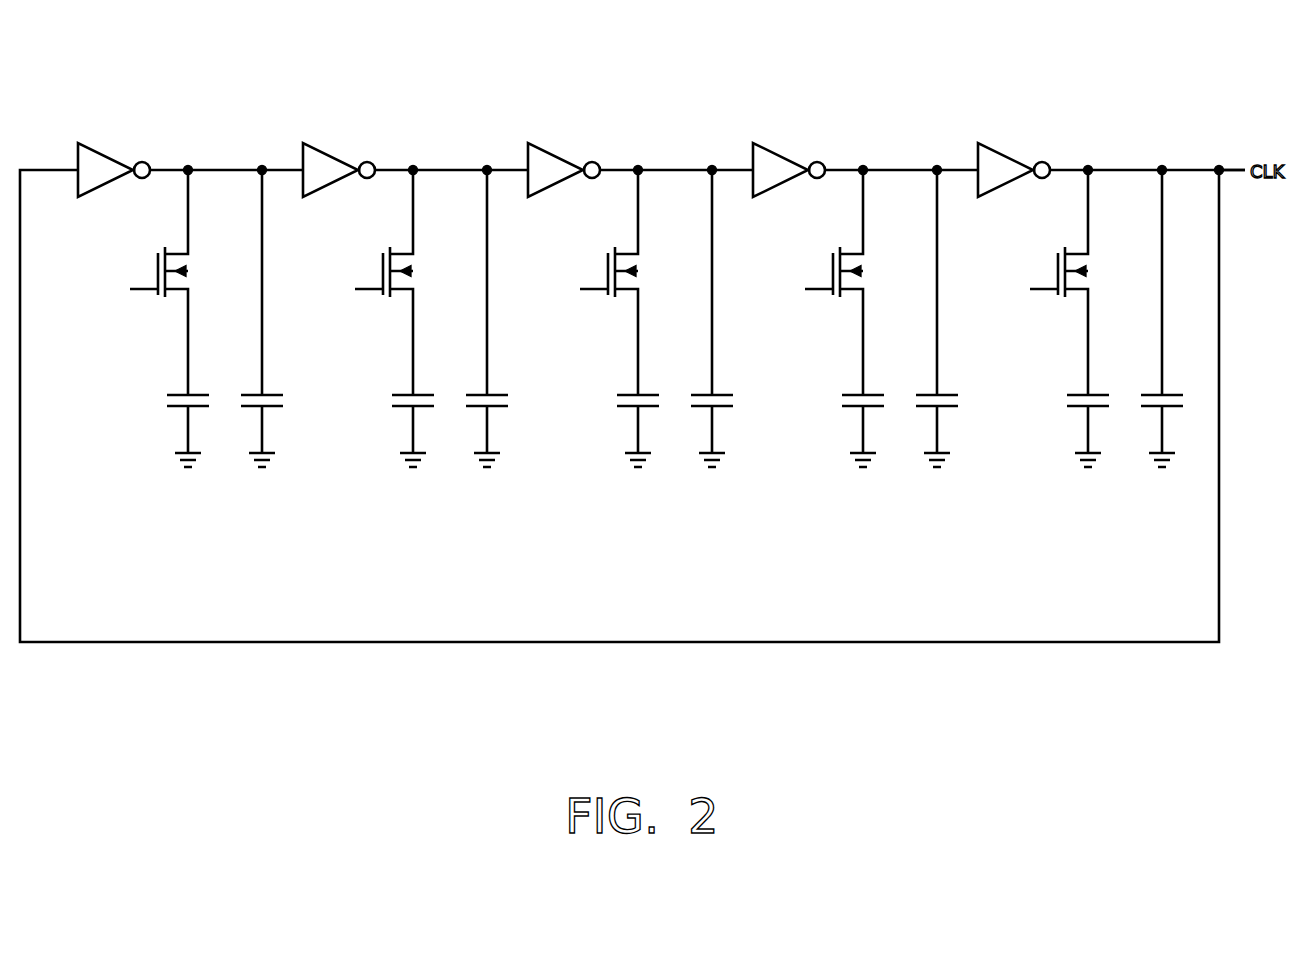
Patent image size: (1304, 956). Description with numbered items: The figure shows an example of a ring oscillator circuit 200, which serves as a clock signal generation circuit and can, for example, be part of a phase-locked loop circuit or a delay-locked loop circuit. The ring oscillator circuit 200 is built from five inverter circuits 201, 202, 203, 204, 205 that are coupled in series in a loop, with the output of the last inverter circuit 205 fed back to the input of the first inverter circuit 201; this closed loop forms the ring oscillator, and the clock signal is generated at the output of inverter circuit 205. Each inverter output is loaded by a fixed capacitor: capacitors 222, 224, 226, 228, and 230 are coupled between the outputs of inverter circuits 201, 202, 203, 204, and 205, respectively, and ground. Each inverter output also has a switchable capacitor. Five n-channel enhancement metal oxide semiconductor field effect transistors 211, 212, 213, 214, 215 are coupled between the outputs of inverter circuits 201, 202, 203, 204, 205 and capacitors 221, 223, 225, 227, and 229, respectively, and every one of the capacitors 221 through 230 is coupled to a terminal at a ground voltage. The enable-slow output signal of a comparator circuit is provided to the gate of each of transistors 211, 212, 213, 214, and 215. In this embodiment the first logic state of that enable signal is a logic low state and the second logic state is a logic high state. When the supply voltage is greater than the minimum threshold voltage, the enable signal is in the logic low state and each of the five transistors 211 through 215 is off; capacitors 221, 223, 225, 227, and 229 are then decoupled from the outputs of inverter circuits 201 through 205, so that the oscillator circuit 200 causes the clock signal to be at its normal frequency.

The ring oscillator circuit 200 is at (150, 62).
The inverter circuit 201 is at (107, 157).
The inverter circuit 202 is at (332, 157).
The inverter circuit 203 is at (557, 157).
The inverter circuit 204 is at (782, 157).
The inverter circuit 205 is at (1007, 157).
The n-channel enhancement MOSFET 211 is at (157, 258).
The n-channel enhancement MOSFET 212 is at (382, 258).
The n-channel enhancement MOSFET 213 is at (607, 258).
The n-channel enhancement MOSFET 214 is at (832, 258).
The n-channel enhancement MOSFET 215 is at (1057, 258).
The capacitor 221 is at (182, 395).
The capacitor 222 is at (273, 395).
The capacitor 223 is at (407, 395).
The capacitor 224 is at (498, 395).
The capacitor 225 is at (632, 395).
The capacitor 226 is at (723, 395).
The capacitor 227 is at (857, 395).
The capacitor 228 is at (948, 395).
The capacitor 229 is at (1082, 395).
The capacitor 230 is at (1157, 395).